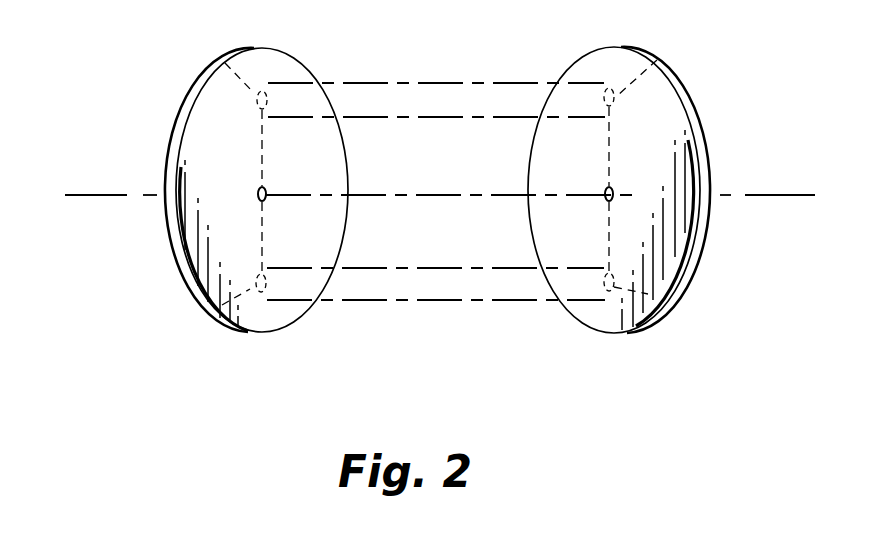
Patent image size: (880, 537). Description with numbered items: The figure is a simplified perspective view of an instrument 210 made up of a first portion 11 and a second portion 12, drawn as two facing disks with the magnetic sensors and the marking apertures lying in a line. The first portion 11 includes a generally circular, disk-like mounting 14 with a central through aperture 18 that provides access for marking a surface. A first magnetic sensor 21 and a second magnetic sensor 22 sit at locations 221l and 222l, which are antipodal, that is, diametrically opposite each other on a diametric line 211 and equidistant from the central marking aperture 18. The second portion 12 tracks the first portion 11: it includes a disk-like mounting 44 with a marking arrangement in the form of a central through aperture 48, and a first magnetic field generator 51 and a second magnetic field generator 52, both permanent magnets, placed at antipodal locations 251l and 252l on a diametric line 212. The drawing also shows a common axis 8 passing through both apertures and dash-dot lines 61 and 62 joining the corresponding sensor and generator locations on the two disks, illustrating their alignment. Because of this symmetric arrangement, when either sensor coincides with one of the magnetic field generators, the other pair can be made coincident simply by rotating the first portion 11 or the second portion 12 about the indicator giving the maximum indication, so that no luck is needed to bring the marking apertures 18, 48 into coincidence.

The central axis 8 is at (790, 197).
The first portion 11 is at (134, 165).
The second portion 12 is at (707, 135).
The disk-like mounting 14 is at (178, 122).
The central through aperture 18 is at (258, 192).
The first magnetic sensor 21 is at (219, 60).
The second magnetic sensor 22 is at (222, 305).
The disk-like mounting 44 is at (682, 92).
The central through aperture 48 is at (614, 188).
The first magnetic field generator 51 is at (655, 57).
The second magnetic field generator 52 is at (667, 300).
The upper connecting line 61 is at (450, 81).
The lower connecting line 62 is at (446, 303).
The instrument 210 is at (445, 417).
The diametric line 211 is at (265, 160).
The diametric line 212 is at (606, 155).
The location of first magnetic sensor 221l is at (266, 90).
The location of second magnetic sensor 222l is at (261, 292).
The location of first magnetic field generator 251l is at (602, 88).
The location of second magnetic field generator 252l is at (607, 291).